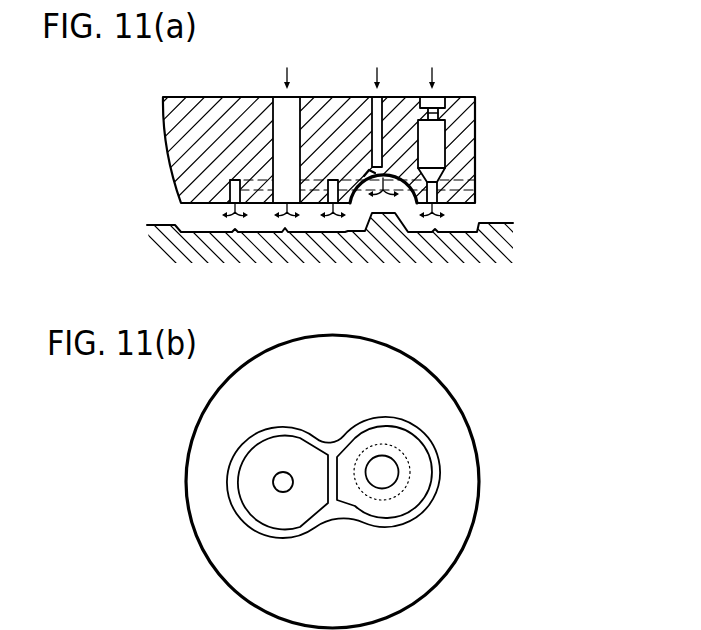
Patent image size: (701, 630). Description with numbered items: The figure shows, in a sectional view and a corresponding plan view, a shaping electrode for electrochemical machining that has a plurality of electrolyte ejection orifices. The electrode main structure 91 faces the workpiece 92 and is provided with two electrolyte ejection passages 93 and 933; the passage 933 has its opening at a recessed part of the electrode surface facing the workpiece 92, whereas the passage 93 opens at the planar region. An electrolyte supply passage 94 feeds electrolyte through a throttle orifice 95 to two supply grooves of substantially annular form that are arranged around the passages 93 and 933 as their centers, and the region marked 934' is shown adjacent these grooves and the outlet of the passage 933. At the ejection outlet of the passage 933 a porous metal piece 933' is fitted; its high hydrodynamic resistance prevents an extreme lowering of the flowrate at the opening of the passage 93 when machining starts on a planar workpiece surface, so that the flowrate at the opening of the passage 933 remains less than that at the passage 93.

In FIG. 11a, the electrode main structure 91 is at (345, 100).
In FIG. 11b, the electrode main structure 91 is at (408, 368).
In FIG. 11a, the workpiece 92 is at (490, 250).
In FIG. 11a, the electrolyte ejection passage 93 is at (289, 100).
In FIG. 11b, the electrolyte ejection passage 93 is at (281, 474).
In FIG. 11a, the electrolyte ejection passage 933 is at (399, 110).
In FIG. 11a, the porous metal piece 933' is at (373, 163).
In FIG. 11b, the porous metal piece 933' is at (403, 449).
In FIG. 11a, the outlet port 934' is at (478, 195).
In FIG. 11b, the outlet port 934' is at (333, 495).
In FIG. 11a, the electrolyte supply passage 94 is at (437, 100).
In FIG. 11a, the throttle orifice 95 is at (436, 113).